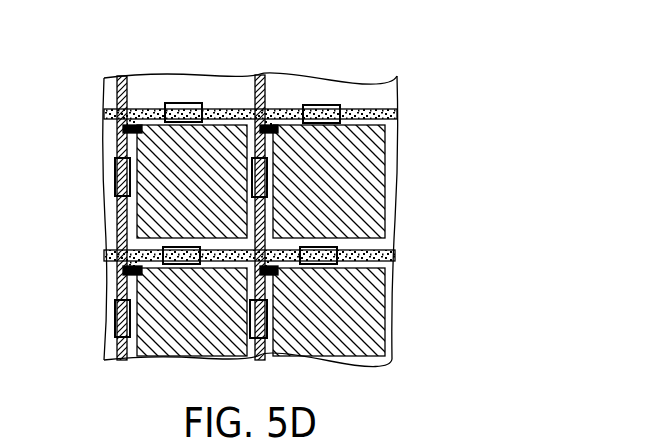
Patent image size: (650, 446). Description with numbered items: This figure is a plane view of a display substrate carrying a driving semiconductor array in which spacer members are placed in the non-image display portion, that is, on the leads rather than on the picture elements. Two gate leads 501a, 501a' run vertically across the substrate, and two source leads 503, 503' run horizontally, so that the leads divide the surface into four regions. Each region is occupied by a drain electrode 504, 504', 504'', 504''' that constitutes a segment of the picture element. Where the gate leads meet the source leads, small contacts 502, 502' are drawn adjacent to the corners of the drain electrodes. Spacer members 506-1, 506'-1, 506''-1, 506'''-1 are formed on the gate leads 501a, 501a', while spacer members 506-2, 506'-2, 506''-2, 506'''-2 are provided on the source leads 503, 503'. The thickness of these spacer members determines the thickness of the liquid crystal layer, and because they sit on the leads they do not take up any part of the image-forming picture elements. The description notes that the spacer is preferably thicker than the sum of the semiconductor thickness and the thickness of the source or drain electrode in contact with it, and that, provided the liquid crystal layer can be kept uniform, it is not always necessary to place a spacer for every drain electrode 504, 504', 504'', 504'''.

The gate lead 501a is at (95, 203).
The gate lead 501a' is at (250, 185).
The contact 502 is at (92, 128).
The contact 502' is at (290, 83).
The source lead 503 is at (279, 101).
The source lead 503' is at (282, 243).
The drain electrode 504 is at (192, 158).
The drain electrode 504' is at (366, 181).
The drain electrode 504'' is at (192, 333).
The drain electrode 504''' is at (367, 312).
The spacer member 506-1 is at (117, 178).
The spacer member 506'-1 is at (304, 178).
The spacer member 506''-1 is at (82, 321).
The spacer member 506'''-1 is at (310, 349).
The spacer member 506-2 is at (176, 103).
The spacer member 506'-2 is at (353, 83).
The spacer member 506''-2 is at (187, 278).
The spacer member 506'''-2 is at (391, 275).